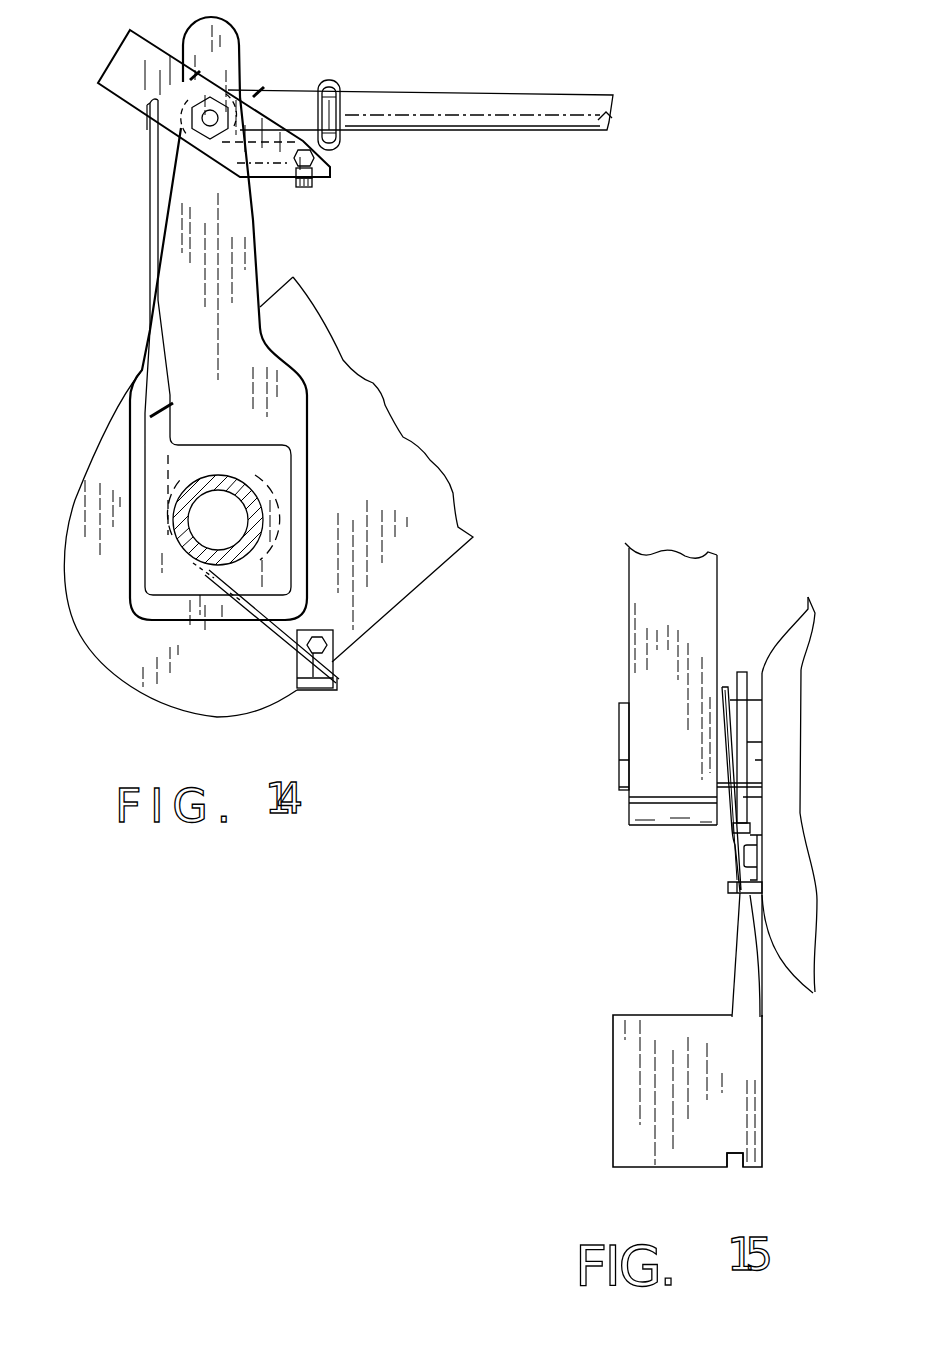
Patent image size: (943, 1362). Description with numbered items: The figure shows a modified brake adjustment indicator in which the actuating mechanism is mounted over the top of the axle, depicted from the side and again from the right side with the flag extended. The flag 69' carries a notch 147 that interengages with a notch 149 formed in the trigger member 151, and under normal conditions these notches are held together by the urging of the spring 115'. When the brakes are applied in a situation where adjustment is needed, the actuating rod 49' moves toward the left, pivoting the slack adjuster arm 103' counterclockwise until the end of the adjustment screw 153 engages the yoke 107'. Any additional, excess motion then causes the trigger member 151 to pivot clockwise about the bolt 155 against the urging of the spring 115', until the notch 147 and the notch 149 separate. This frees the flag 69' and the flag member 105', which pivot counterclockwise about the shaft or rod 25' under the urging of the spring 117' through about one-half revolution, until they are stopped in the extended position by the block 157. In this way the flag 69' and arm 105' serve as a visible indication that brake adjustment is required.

In FIG. 14, the trigger member 151 is at (127, 60).
In FIG. 14, the bolt 155 is at (220, 108).
In FIG. 14, the spring 115' is at (299, 56).
In FIG. 14, the yoke 107' is at (346, 96).
In FIG. 14, the actuating rod 49' is at (420, 136).
In FIG. 14, the adjustment screw 153 is at (312, 180).
In FIG. 14, the notch 149 is at (147, 117).
In FIG. 14, the slack adjuster arm 103' is at (268, 367).
In FIG. 15, the slack adjuster arm 103' is at (716, 671).
In FIG. 14, the flag member 105' is at (111, 256).
In FIG. 15, the flag member 105' is at (700, 852).
In FIG. 14, the spring 117' is at (266, 623).
In FIG. 14, the block 157 is at (313, 682).
In FIG. 15, the block 157 is at (728, 887).
In FIG. 15, the shaft or rod 25' is at (598, 740).
In FIG. 15, the flag 69' is at (679, 882).
In FIG. 15, the notch 147 is at (733, 1167).